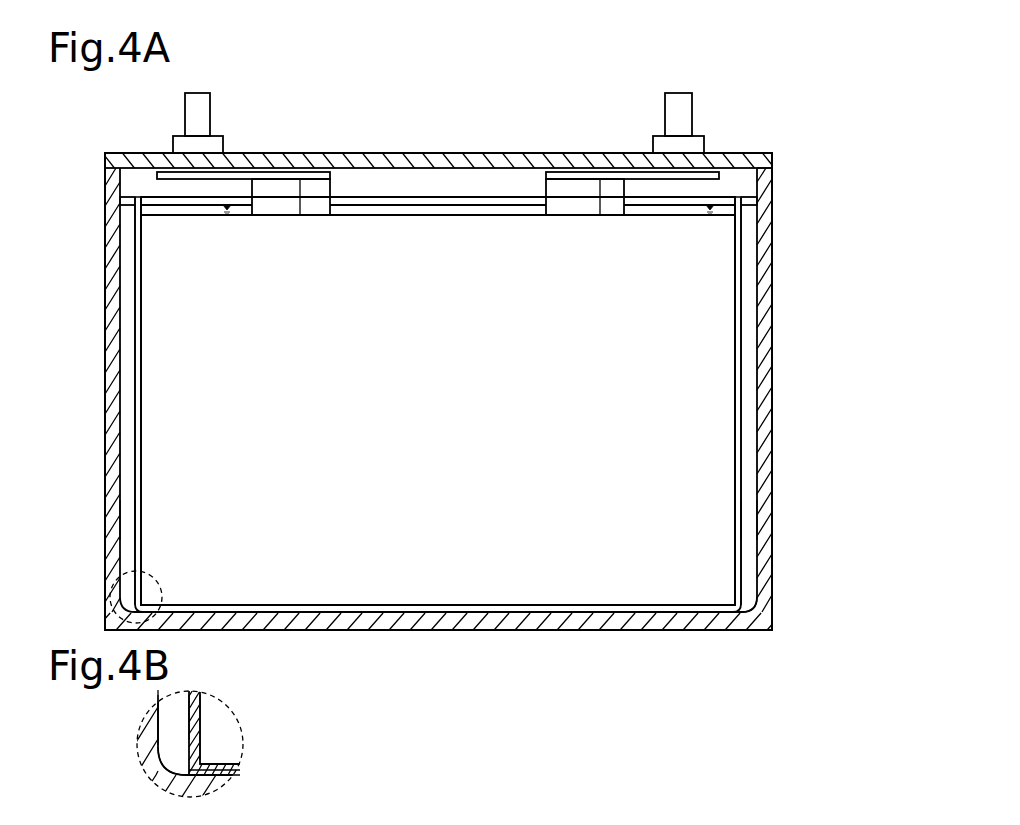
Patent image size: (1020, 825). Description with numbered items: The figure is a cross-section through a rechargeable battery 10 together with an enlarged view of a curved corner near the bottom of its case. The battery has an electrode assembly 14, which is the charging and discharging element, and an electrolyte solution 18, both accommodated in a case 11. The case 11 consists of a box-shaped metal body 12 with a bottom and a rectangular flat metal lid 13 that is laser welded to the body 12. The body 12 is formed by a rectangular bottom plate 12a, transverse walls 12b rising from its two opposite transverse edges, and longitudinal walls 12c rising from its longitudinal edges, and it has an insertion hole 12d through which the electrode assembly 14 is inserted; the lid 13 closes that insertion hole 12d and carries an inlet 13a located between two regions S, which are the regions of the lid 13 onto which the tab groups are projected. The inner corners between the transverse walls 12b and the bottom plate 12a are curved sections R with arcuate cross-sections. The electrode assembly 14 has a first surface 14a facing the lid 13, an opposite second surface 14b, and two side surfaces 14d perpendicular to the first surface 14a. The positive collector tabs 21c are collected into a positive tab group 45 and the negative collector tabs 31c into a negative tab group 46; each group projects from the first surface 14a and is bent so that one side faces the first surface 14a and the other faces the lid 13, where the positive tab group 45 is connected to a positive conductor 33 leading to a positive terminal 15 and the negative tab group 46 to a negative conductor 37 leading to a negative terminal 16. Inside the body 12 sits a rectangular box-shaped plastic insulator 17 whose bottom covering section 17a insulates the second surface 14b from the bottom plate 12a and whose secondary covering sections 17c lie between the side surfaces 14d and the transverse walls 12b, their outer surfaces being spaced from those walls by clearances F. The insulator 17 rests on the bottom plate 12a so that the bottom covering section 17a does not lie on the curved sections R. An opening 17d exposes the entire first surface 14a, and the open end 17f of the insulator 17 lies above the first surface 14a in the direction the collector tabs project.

In FIG. 4A, the rechargeable battery 10 is at (801, 121).
In FIG. 4A, the case 11 is at (44, 203).
In FIG. 4A, the body 12 is at (110, 186).
In FIG. 4A, the bottom plate 12a is at (457, 622).
In FIG. 4A, the transverse walls 12b is at (112, 440).
In FIG. 4B, the longitudinal walls 12c is at (205, 786).
In FIG. 4A, the insertion hole 12d is at (762, 178).
In FIG. 4A, the lid 13 is at (105, 157).
In FIG. 4A, the inlet 13a is at (437, 153).
In FIG. 4A, the electrode assembly 14 is at (752, 412).
In FIG. 4A, the first surface 14a is at (440, 210).
In FIG. 4A, the second surface 14b is at (665, 606).
In FIG. 4A, the side surfaces 14d is at (142, 380).
In FIG. 4A, the positive terminal 15 is at (198, 96).
In FIG. 4A, the negative terminal 16 is at (678, 96).
In FIG. 4A, the insulator 17 is at (136, 262).
In FIG. 4A, the bottom covering section 17a is at (575, 609).
In FIG. 4B, the bottom covering section 17a is at (228, 770).
In FIG. 4A, the secondary covering sections 17c is at (137, 322).
In FIG. 4B, the secondary covering sections 17c is at (202, 715).
In FIG. 4A, the opening 17d is at (744, 218).
In FIG. 4A, the open end 17f is at (756, 200).
In FIG. 4A, the electrolyte solution 18 is at (124, 201).
In FIG. 4A, the positive collector tabs 21c is at (310, 208).
In FIG. 4A, the negative collector tabs 31c is at (603, 208).
In FIG. 4A, the positive conductor 33 is at (240, 177).
In FIG. 4A, the negative conductor 37 is at (612, 177).
In FIG. 4A, the positive tab group 45 is at (258, 208).
In FIG. 4A, the negative tab group 46 is at (563, 208).
In FIG. 4A, the regions S is at (292, 153).
In FIG. 4A, the clearances F is at (124, 520).
In FIG. 4B, the clearances F is at (176, 706).
In FIG. 4A, the curved sections R is at (757, 598).
In FIG. 4B, the curved sections R is at (172, 765).